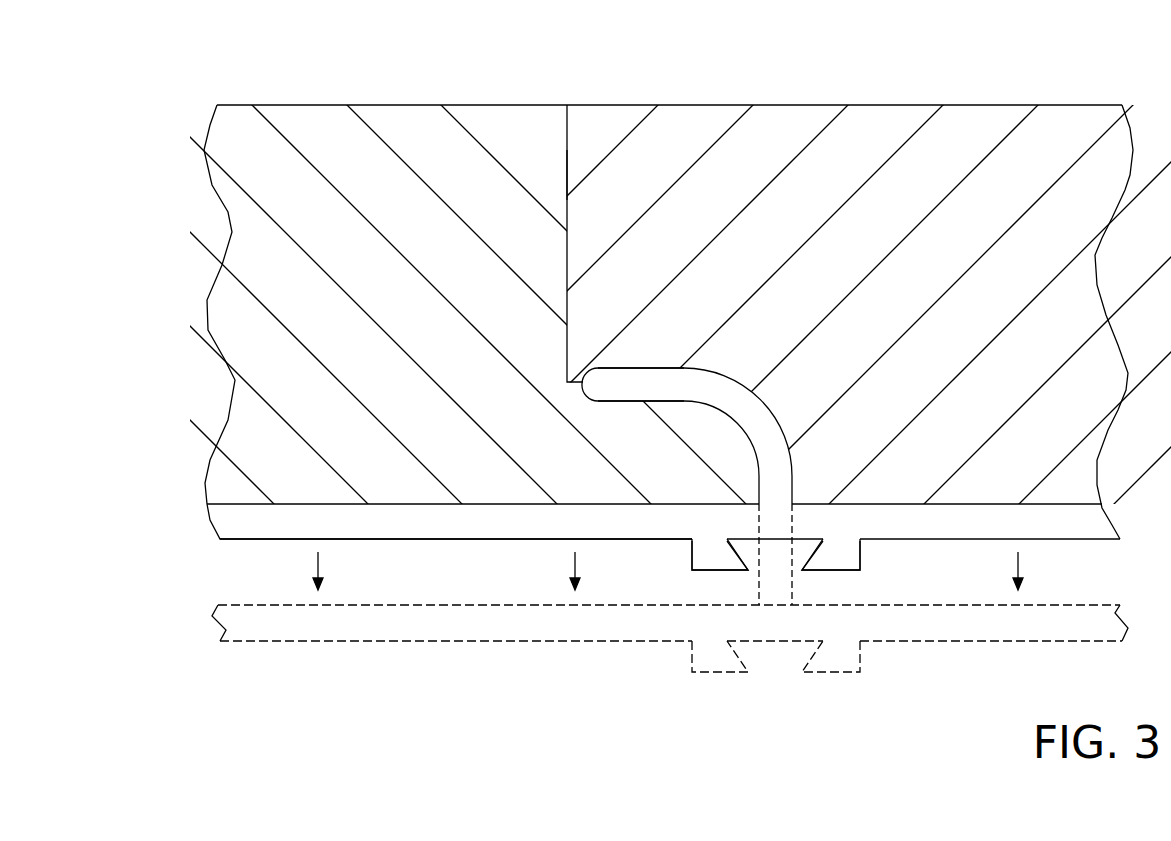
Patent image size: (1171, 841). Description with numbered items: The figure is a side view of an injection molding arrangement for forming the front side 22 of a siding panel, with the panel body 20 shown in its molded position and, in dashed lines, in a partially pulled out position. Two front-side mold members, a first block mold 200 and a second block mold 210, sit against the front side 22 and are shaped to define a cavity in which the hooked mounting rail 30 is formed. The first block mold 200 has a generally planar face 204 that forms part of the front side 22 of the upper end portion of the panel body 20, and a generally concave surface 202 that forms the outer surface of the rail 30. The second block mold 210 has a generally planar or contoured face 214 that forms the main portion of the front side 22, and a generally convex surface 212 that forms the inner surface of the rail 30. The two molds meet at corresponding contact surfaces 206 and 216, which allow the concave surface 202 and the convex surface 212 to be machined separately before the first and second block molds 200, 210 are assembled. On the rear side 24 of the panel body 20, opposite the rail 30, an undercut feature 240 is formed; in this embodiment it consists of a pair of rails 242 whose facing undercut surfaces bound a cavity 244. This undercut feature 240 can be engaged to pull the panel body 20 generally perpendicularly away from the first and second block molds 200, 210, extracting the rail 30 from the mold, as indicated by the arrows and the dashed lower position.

The first block mold 200 is at (924, 291).
The second block mold 210 is at (402, 291).
The contact surface of first block mold 206 is at (568, 157).
The contact surface of second block mold 216 is at (567, 177).
The concave surface 202 is at (643, 366).
The convex surface 212 is at (610, 402).
The mounting rail 30 is at (758, 425).
The planar face 204 is at (947, 466).
The planar or contoured face 214 is at (507, 504).
The panel body 20 is at (923, 524).
The front side 22 is at (1048, 508).
The rear side 24 is at (442, 539).
The undercut feature 240 is at (680, 572).
The rails of undercut feature 242 is at (712, 560).
The cavity of undercut feature 244 is at (747, 550).